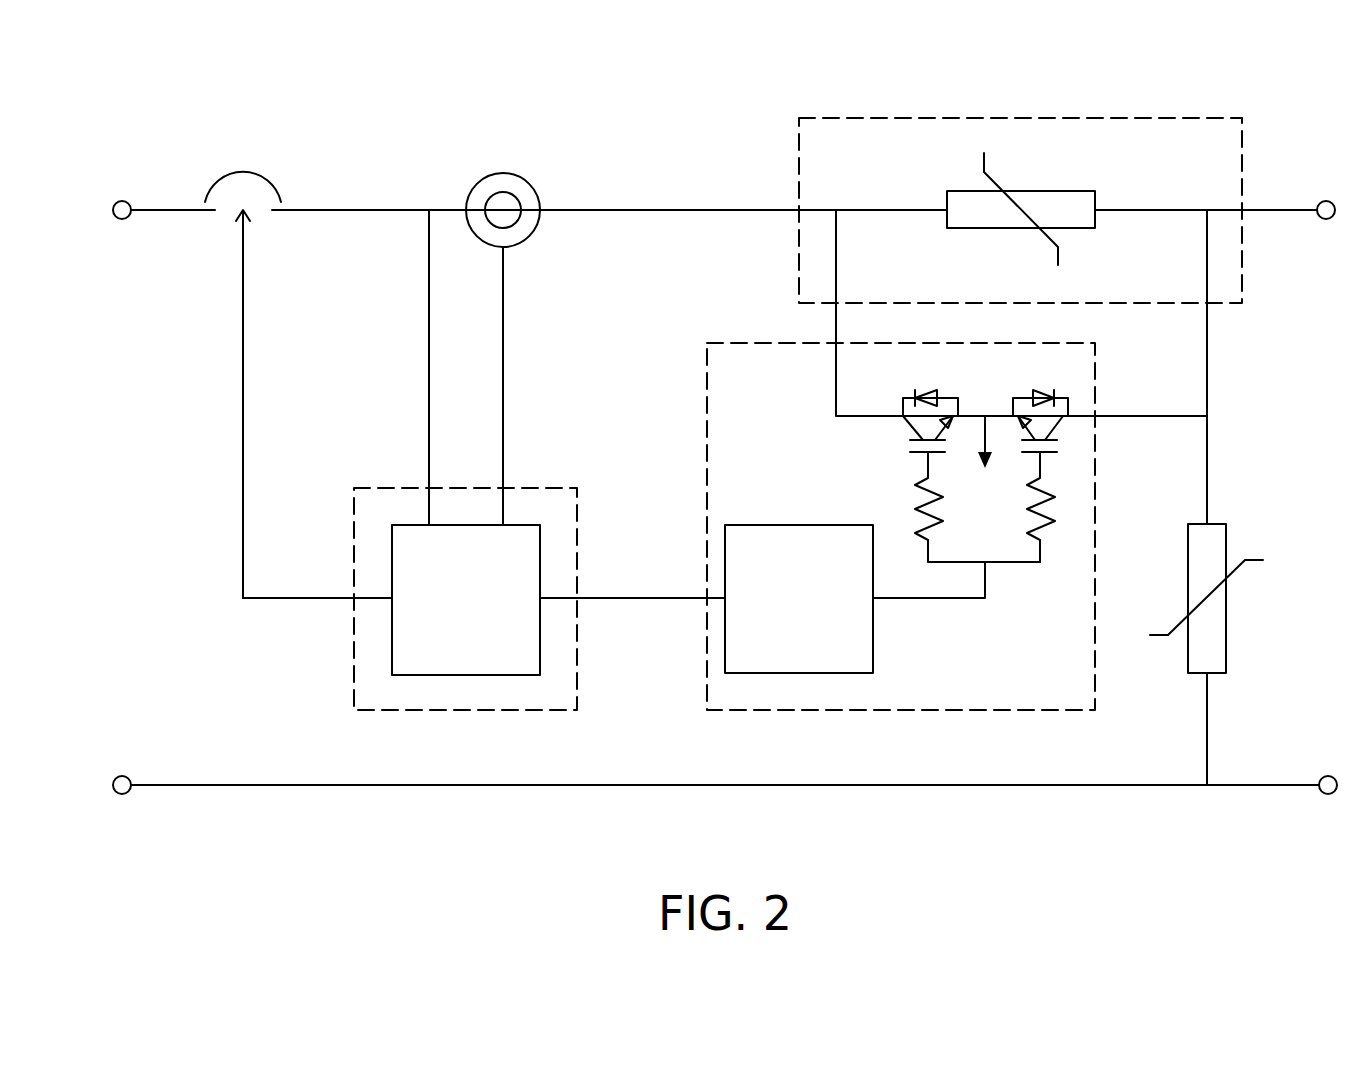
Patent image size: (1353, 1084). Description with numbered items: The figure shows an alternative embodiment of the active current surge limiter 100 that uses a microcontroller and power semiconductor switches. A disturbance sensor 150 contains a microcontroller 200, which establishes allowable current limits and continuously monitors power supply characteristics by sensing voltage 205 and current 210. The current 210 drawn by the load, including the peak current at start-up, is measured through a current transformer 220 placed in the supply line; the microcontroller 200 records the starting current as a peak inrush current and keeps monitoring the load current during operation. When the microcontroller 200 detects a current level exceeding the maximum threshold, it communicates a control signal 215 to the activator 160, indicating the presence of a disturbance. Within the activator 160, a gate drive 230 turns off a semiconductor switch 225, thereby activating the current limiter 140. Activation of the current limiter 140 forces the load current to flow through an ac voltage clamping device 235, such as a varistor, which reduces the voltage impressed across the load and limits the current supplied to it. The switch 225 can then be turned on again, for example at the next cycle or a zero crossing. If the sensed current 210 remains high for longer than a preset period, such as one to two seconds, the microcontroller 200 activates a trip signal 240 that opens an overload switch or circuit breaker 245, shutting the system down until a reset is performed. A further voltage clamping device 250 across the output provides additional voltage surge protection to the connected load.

The active current surge limiter 100 is at (467, 118).
The current limiter 140 is at (1020, 210).
The disturbance sensor 150 is at (465, 599).
The activator 160 is at (901, 526).
The microcontroller 200 is at (487, 613).
The sensing voltage 205 is at (428, 342).
The current 210 is at (503, 342).
The control signal 215 is at (605, 599).
The current transformer 220 is at (502, 173).
The semiconductor switch 225 is at (1040, 375).
The gate drive 230 is at (820, 612).
The ac voltage clamping device 235 is at (1058, 191).
The trip signal 240 is at (243, 417).
The circuit breaker 245 is at (243, 172).
The voltage clamping device 250 is at (1226, 542).